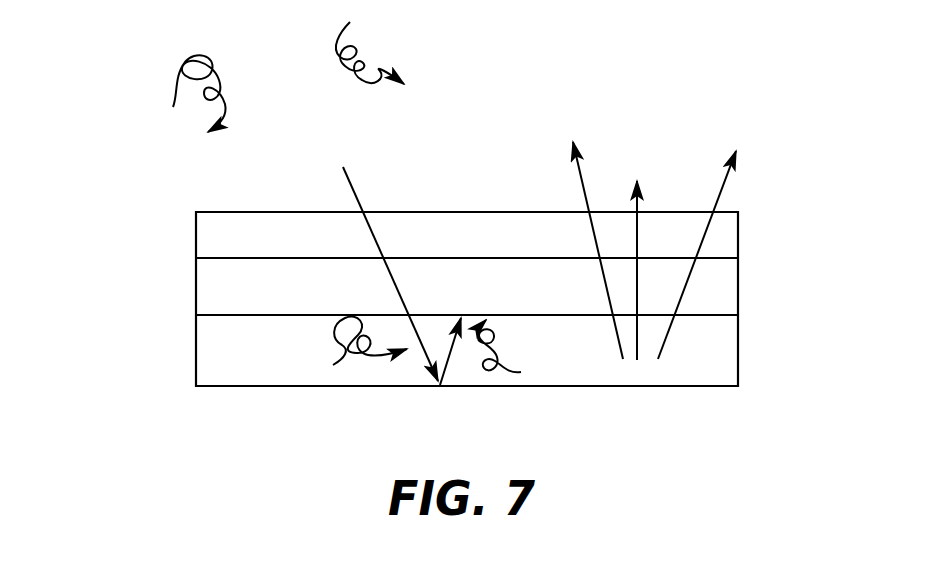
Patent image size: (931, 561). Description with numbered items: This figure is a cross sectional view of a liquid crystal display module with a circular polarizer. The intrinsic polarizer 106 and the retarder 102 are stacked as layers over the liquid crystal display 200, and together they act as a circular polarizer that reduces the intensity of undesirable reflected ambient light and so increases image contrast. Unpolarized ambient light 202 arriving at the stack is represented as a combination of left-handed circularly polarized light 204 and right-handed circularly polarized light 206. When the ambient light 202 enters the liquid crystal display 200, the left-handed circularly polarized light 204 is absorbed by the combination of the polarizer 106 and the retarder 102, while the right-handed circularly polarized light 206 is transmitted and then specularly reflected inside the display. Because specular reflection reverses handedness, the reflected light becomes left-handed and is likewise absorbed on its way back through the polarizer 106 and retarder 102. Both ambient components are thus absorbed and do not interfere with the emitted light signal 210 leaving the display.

The retarder 102 is at (728, 236).
The intrinsic polarizer 106 is at (728, 294).
The liquid crystal display 200 is at (728, 357).
The unpolarized ambient light 202 is at (321, 121).
The left-handed circularly polarized light 204 is at (172, 41).
The right-handed circularly polarized light 206 is at (370, 44).
The emitted light signal 210 is at (654, 248).